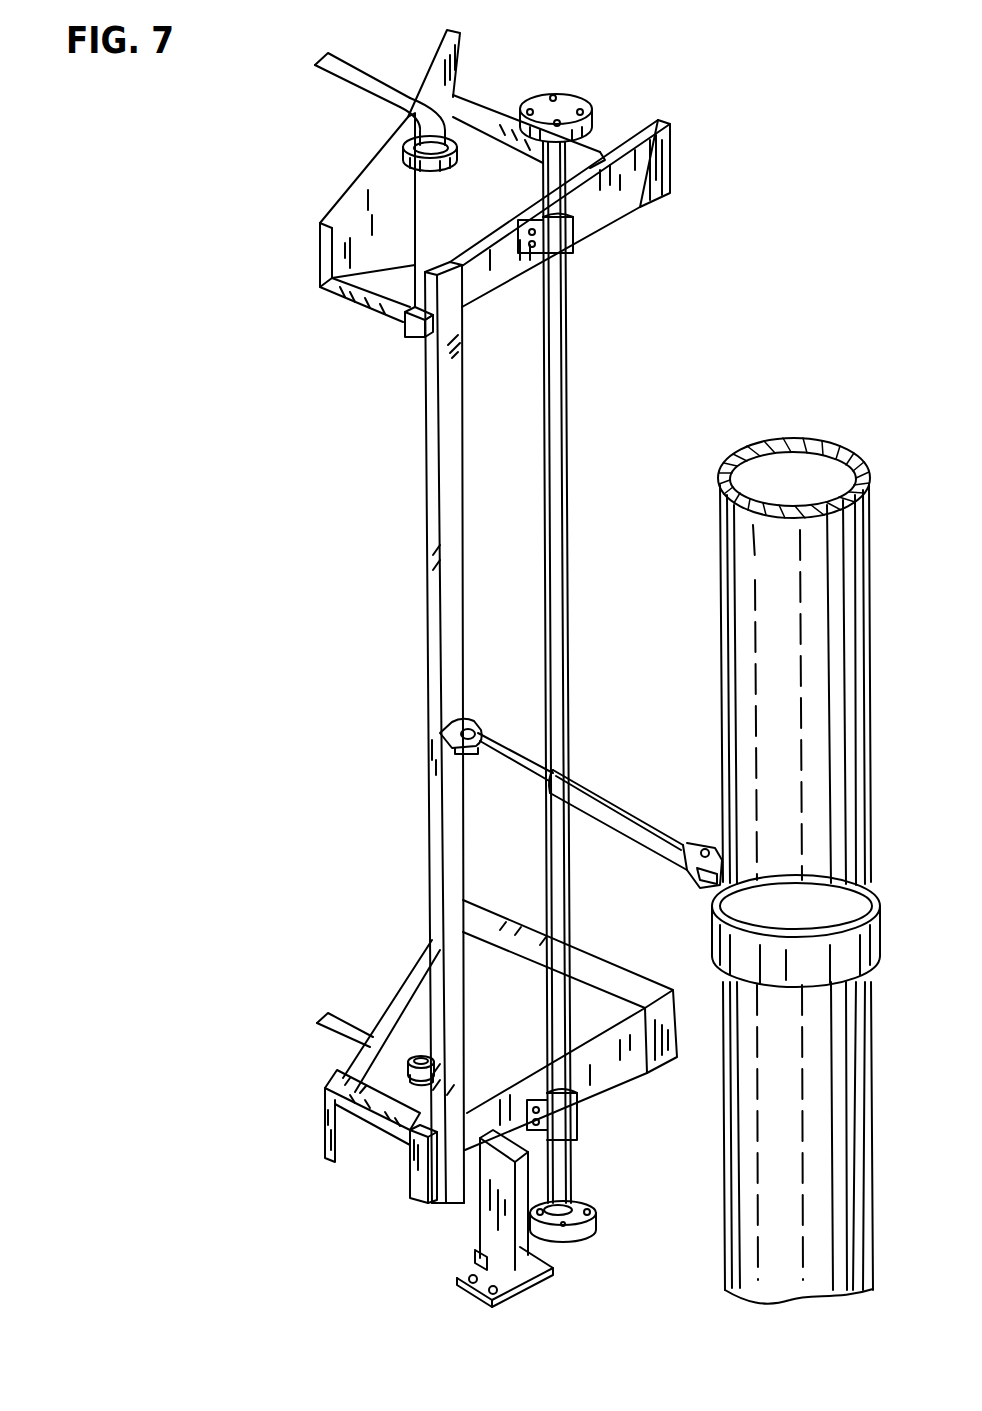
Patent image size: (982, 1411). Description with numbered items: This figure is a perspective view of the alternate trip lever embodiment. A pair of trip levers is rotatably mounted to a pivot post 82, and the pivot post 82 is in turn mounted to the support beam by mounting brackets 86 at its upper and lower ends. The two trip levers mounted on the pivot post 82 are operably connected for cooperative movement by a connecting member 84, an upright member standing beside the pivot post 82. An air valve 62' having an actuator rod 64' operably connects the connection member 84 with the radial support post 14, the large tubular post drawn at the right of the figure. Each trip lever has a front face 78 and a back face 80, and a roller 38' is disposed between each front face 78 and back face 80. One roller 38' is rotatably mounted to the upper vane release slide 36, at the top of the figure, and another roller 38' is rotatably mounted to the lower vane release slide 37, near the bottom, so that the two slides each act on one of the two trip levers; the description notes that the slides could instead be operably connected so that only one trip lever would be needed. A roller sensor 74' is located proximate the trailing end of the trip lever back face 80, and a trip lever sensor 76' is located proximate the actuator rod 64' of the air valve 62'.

The radial support post 14 is at (767, 871).
The upper vane release slide 36 is at (380, 81).
The lower vane release slide 37 is at (331, 997).
The roller 38' is at (402, 610).
The air valve 62' is at (600, 809).
The actuator rod 64' is at (486, 710).
The roller sensor 74' is at (360, 772).
The trip lever sensor 76' is at (472, 1218).
The front face 78 is at (346, 611).
The back face 80 is at (601, 622).
The pivot post 82 is at (585, 672).
The connecting member 84 is at (402, 732).
The mounting brackets 86 is at (589, 649).